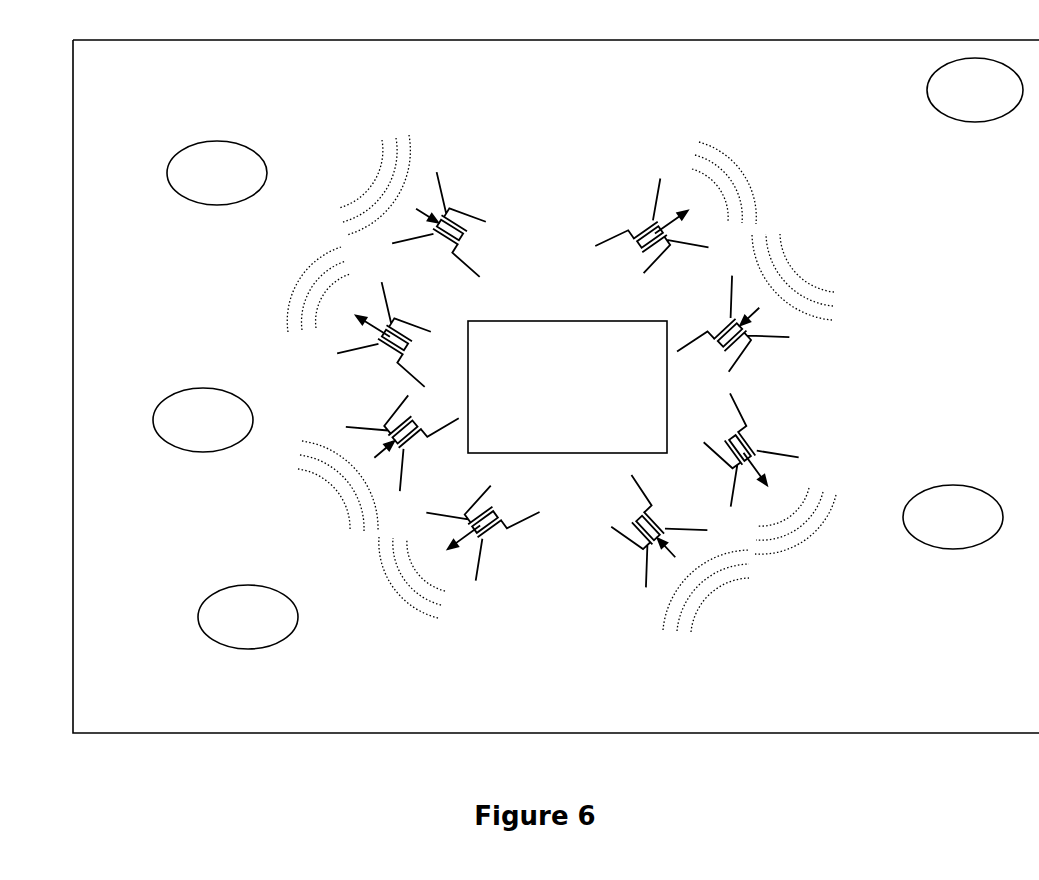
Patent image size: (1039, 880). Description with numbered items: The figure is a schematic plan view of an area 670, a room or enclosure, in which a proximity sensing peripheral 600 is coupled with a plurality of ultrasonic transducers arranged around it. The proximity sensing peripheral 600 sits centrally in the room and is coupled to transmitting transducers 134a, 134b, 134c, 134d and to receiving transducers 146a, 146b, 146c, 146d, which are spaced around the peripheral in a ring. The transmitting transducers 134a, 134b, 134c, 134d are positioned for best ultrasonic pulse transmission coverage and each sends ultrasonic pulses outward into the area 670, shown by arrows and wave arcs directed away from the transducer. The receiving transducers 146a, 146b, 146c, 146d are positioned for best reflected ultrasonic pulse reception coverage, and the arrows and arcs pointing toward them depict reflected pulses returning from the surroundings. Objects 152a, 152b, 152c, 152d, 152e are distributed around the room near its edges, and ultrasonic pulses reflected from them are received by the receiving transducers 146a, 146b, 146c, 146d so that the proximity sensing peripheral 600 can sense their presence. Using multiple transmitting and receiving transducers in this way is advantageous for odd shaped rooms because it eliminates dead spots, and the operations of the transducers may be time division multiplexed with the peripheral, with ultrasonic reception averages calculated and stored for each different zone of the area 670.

The area 670 is at (606, 40).
The proximity sensing peripheral 600 is at (507, 320).
The object 152a is at (963, 122).
The object 152b is at (932, 486).
The object 152c is at (228, 586).
The object 152d is at (182, 389).
The object 152e is at (200, 143).
The transmitting transducer 134a is at (670, 221).
The transmitting transducer 134b is at (756, 468).
The transmitting transducer 134c is at (464, 538).
The transmitting transducer 134d is at (373, 324).
The receiving transducer 146a is at (749, 317).
The receiving transducer 146b is at (666, 547).
The receiving transducer 146c is at (384, 449).
The receiving transducer 146d is at (427, 213).